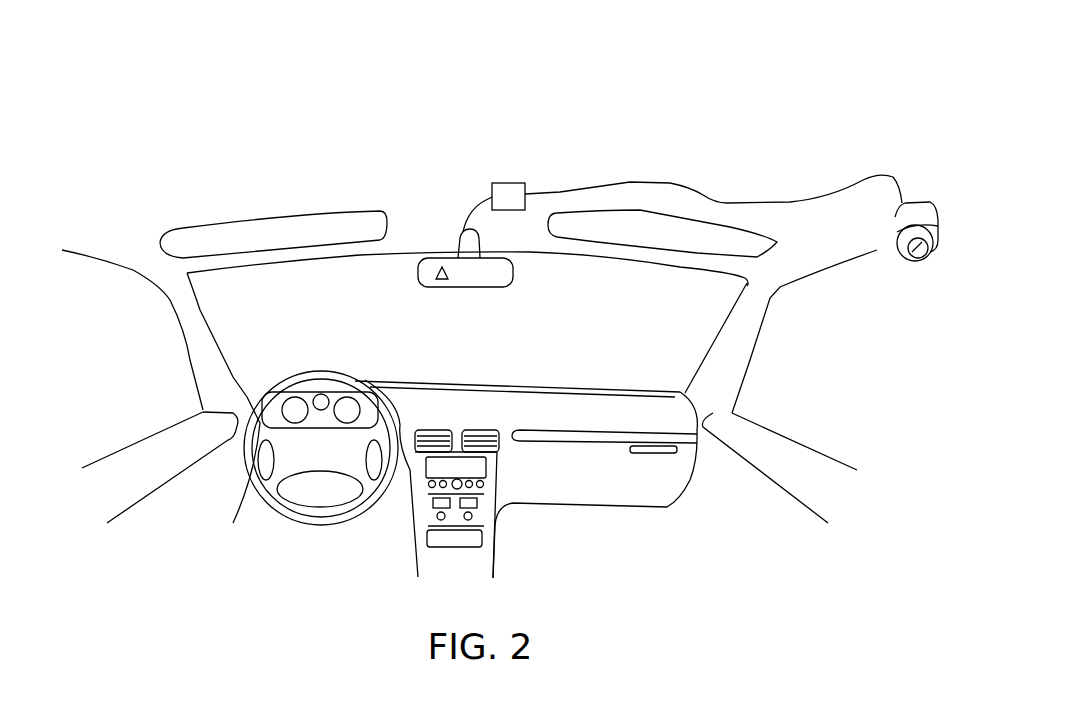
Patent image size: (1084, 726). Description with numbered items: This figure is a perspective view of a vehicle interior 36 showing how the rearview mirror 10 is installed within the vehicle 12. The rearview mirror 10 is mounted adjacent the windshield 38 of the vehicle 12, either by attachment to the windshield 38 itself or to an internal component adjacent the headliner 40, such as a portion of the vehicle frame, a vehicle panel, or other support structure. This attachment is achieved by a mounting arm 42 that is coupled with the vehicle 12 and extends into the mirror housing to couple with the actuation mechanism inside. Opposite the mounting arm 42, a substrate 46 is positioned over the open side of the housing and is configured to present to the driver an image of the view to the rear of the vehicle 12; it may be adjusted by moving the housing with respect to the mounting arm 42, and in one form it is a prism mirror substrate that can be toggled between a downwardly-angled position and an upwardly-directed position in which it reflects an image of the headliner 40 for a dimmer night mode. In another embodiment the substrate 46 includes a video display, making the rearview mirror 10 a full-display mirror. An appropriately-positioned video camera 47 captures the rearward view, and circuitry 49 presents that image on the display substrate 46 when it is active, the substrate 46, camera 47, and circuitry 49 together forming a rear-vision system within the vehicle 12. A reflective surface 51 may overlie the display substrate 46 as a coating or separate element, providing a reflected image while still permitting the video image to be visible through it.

The rearview mirror 10 is at (533, 277).
The vehicle 12 is at (283, 116).
The vehicle interior 36 is at (190, 197).
The windshield 38 is at (572, 343).
The headliner 40 is at (428, 178).
The mounting arm 42 is at (458, 255).
The substrate 46 is at (456, 288).
The video camera 47 is at (917, 200).
The circuitry 49 is at (517, 181).
The reflective surface 51 is at (440, 278).